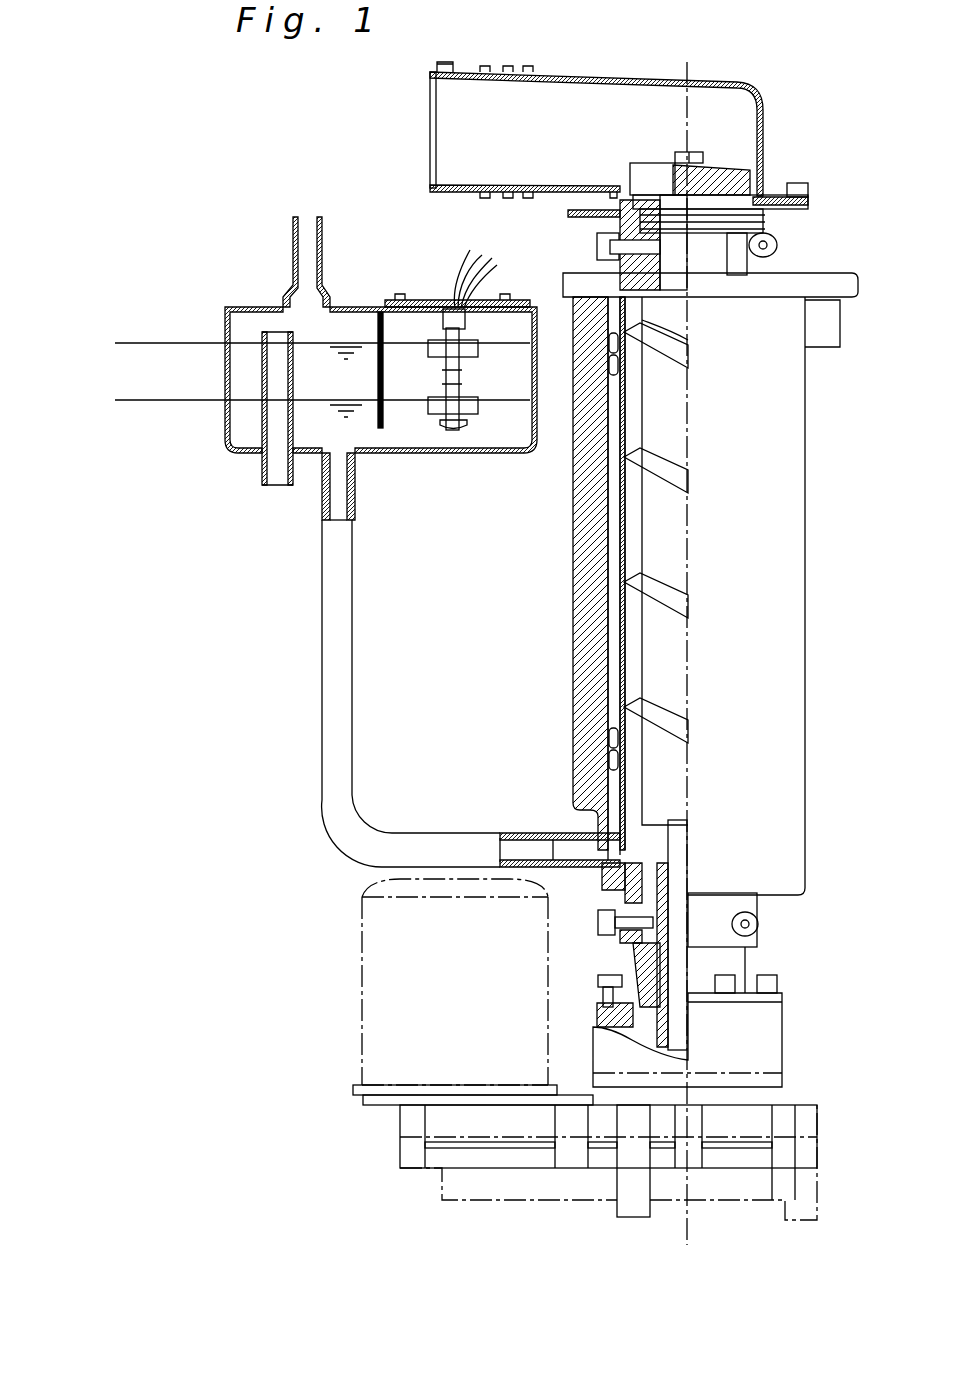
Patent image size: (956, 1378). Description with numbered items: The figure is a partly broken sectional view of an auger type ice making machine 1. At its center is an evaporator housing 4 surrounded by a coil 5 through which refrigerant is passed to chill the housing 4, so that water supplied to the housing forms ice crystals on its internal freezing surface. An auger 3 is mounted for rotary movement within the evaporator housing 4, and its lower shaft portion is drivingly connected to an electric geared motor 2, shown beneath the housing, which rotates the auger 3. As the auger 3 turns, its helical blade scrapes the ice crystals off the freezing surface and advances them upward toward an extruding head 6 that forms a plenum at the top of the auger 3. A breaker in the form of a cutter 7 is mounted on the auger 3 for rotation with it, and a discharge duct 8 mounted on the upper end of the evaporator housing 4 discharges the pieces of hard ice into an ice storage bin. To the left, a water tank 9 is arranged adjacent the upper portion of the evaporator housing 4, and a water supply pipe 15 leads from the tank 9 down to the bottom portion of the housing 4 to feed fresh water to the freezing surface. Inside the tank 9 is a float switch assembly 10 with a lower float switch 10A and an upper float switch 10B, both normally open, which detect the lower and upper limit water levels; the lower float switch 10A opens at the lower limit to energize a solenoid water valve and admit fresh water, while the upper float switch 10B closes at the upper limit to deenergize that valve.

The apparatus 1 is at (834, 597).
The electric geared motor 2 is at (378, 993).
The auger 3 is at (668, 698).
The evaporator housing 4 is at (615, 622).
The coil 5 is at (612, 745).
The extruding head 6 is at (613, 228).
The cutter 7 is at (735, 168).
The discharge duct 8 is at (665, 82).
The water tank 9 is at (240, 445).
The float switch assembly 10 is at (480, 388).
The lower float switch 10A is at (450, 420).
The upper float switch 10B is at (478, 328).
The water supply pipe 15 is at (320, 752).